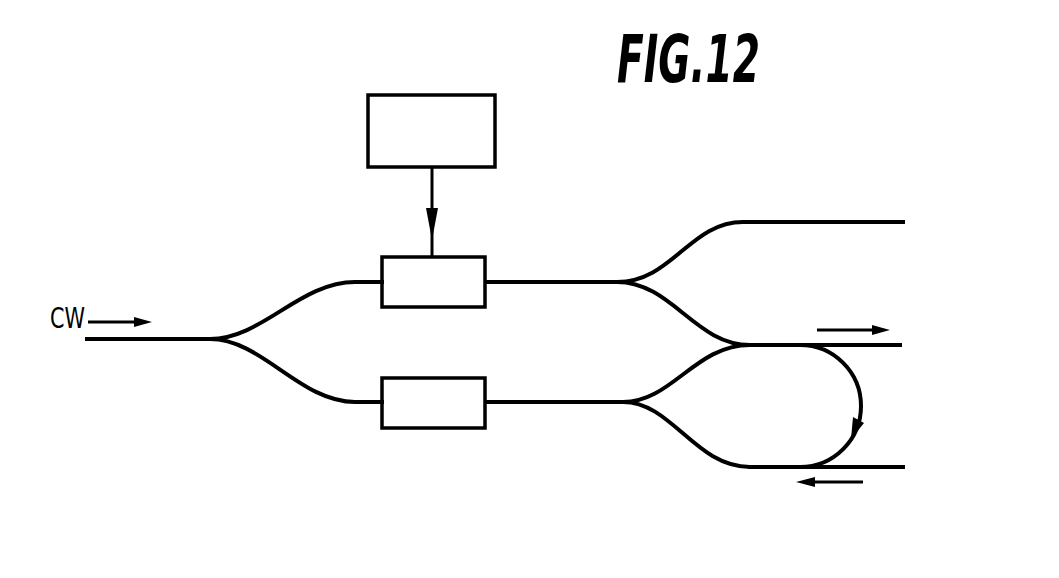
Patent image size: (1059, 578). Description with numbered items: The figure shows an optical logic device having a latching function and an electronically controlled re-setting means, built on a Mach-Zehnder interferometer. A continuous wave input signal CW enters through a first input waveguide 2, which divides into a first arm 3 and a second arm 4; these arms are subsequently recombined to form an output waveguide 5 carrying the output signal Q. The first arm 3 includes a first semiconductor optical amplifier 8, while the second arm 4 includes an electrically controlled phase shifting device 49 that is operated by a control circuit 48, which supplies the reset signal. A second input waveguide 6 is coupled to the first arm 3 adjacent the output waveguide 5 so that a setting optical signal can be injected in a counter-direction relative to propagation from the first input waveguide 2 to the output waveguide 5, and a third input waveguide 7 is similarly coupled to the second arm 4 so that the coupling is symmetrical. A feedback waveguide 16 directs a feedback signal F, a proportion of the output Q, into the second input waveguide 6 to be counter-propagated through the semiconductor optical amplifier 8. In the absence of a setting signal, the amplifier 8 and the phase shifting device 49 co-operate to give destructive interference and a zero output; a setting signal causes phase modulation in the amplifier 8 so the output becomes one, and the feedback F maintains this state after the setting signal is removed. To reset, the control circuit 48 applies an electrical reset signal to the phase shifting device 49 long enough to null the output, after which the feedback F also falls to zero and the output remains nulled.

The first input waveguide 2 is at (184, 337).
The first arm 3 is at (308, 395).
The second arm 4 is at (320, 290).
The output waveguide 5 is at (893, 348).
The second input waveguide 6 is at (710, 455).
The third input waveguide 7 is at (715, 222).
The first semiconductor optical amplifier 8 is at (478, 430).
The feedback waveguide 16 is at (843, 450).
The control circuit 48 is at (452, 95).
The electrically controlled phase shifting device 49 is at (486, 262).